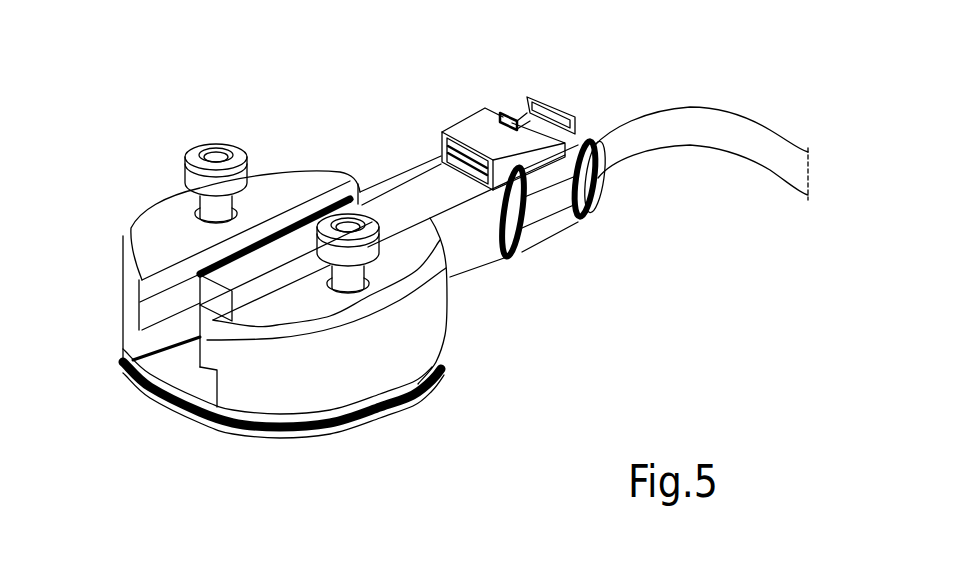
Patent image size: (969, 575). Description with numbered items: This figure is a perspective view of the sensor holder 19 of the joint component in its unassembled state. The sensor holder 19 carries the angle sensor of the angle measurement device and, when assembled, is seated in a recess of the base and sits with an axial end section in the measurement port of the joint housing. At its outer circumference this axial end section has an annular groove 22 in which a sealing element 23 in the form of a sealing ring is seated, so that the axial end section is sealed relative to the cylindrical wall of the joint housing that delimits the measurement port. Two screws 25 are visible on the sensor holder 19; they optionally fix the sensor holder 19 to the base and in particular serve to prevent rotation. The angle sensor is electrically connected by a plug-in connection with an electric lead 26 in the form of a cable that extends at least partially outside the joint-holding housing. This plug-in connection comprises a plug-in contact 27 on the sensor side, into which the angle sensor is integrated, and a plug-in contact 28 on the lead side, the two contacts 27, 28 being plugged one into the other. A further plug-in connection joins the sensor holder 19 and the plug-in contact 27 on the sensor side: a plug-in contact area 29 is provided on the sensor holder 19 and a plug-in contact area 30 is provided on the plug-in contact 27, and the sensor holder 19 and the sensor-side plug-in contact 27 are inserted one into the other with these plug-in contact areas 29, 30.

The sensor holder 19 is at (130, 222).
The annular groove 22 is at (410, 397).
The sealing element 23 is at (233, 423).
The screws 25 is at (203, 137).
The electric lead 26 is at (673, 123).
The plug-in contact on the sensor side 27 is at (417, 187).
The plug-in contact on the lead side 28 is at (493, 133).
The plug-in contact area 29 is at (210, 378).
The plug-in contact area 30 is at (182, 330).